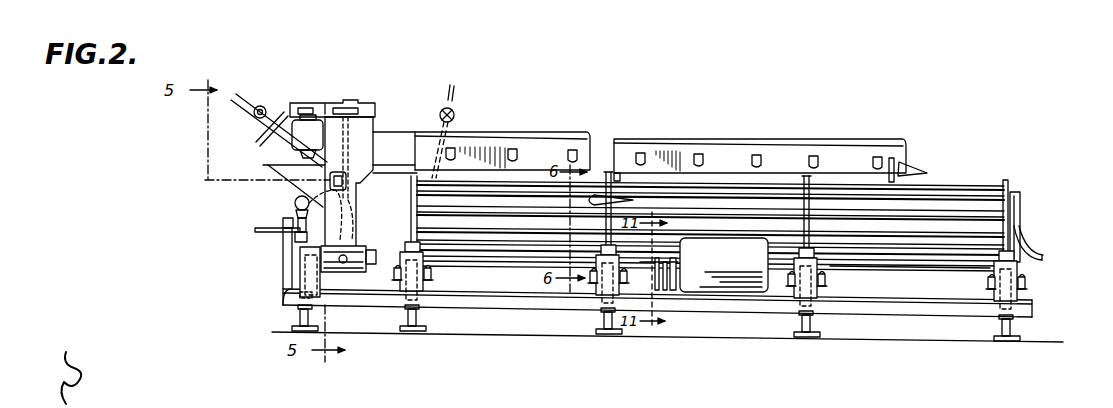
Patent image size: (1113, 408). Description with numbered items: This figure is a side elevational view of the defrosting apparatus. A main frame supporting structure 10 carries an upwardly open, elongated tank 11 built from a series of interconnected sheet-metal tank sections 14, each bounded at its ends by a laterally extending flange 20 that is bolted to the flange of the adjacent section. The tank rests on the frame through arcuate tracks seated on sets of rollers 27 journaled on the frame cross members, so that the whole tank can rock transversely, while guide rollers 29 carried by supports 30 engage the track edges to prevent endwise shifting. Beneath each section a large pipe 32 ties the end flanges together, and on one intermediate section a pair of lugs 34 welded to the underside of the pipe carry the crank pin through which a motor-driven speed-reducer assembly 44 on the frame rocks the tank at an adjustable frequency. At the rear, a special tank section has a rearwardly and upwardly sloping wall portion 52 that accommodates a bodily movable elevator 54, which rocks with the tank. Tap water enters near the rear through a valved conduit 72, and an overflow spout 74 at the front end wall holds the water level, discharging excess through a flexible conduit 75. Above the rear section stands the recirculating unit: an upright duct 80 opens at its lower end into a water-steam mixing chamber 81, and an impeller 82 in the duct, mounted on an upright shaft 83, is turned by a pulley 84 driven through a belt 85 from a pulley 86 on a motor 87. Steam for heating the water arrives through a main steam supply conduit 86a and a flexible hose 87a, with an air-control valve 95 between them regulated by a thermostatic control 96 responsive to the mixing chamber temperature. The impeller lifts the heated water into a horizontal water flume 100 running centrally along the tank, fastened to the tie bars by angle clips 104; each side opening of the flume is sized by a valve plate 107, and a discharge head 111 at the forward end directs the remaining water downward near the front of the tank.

The main frame supporting structure 10 is at (736, 302).
The tank 11 is at (703, 200).
The tank sections 14 is at (752, 200).
The flange 20 is at (622, 203).
The rollers 27 is at (403, 264).
The guide rollers 29 is at (436, 282).
The supports 30 is at (429, 289).
The pipe 32 is at (915, 274).
The lugs 34 is at (677, 263).
The motor-driven speed-reducer assembly 44 is at (737, 250).
The sloping wall portion 52 is at (266, 165).
The elevator 54 is at (255, 123).
The valved conduit 72 is at (456, 94).
The overflow spout 74 is at (1022, 198).
The flexible conduit 75 is at (1036, 258).
The upright duct 80 is at (357, 196).
The mixing chamber 81 is at (362, 246).
The impeller 82 is at (358, 212).
The upright shaft 83 is at (360, 130).
The pulley 84 is at (348, 103).
The belt 85 is at (324, 103).
The pulley 86 is at (300, 104).
The main steam supply conduit 86a is at (308, 238).
The motor 87 is at (291, 125).
The flexible hose 87a is at (303, 248).
The air-control valve 95 is at (295, 204).
The thermostatic control 96 is at (348, 178).
The water flume 100 is at (540, 153).
The angle clips 104 is at (627, 153).
The valve plate 107 is at (654, 157).
The discharge head 111 is at (914, 168).